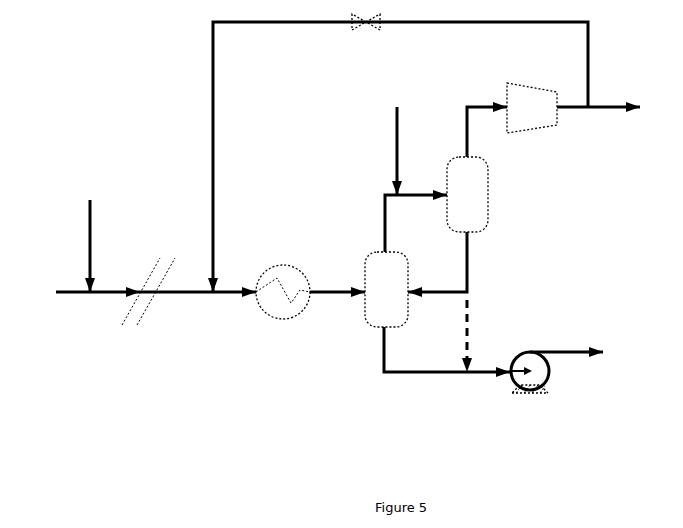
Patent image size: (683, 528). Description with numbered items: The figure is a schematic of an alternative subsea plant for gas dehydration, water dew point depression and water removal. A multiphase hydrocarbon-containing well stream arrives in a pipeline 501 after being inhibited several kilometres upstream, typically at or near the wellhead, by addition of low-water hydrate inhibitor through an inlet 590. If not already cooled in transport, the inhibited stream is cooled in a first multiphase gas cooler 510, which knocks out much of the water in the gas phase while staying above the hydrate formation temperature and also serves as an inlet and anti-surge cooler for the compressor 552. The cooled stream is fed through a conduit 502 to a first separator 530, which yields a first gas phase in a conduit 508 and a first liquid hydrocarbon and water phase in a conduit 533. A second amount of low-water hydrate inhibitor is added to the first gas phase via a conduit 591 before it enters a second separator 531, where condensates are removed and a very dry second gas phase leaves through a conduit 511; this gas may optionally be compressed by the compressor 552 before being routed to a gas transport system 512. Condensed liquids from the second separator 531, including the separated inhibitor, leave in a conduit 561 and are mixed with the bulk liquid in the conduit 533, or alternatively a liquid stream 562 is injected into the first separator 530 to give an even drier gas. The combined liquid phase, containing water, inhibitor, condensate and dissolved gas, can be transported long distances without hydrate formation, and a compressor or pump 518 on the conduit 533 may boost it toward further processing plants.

The pipeline 501 is at (62, 290).
The inlet 590 is at (90, 218).
The first multiphase gas cooler 510 is at (280, 267).
The conduit 502 is at (330, 290).
The first separator 530 is at (386, 289).
The conduit 508 is at (383, 215).
The conduit 591 is at (395, 135).
The second separator 531 is at (467, 194).
The conduit 511 is at (470, 105).
The compressor 552 is at (532, 108).
The gas transport system 512 is at (608, 106).
The conduit 561 is at (470, 273).
The liquid stream 562 is at (470, 315).
The conduit 533 is at (434, 373).
The pump 518 is at (550, 378).